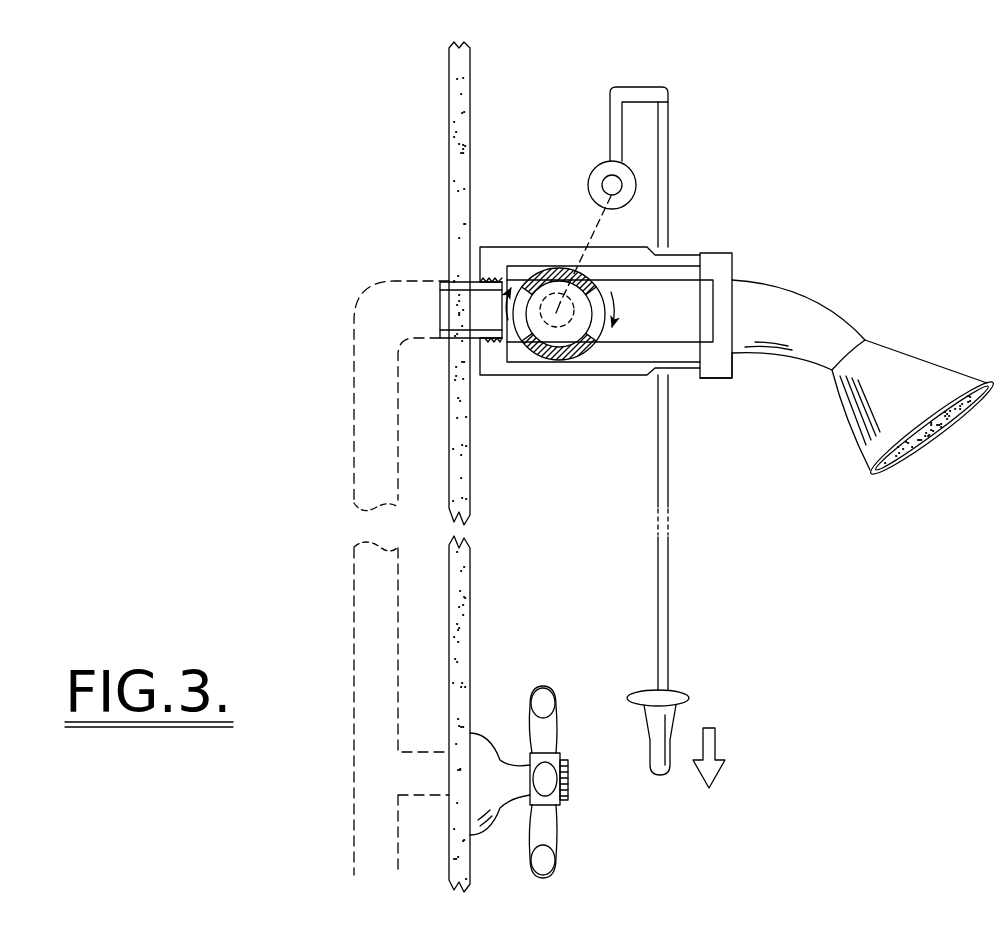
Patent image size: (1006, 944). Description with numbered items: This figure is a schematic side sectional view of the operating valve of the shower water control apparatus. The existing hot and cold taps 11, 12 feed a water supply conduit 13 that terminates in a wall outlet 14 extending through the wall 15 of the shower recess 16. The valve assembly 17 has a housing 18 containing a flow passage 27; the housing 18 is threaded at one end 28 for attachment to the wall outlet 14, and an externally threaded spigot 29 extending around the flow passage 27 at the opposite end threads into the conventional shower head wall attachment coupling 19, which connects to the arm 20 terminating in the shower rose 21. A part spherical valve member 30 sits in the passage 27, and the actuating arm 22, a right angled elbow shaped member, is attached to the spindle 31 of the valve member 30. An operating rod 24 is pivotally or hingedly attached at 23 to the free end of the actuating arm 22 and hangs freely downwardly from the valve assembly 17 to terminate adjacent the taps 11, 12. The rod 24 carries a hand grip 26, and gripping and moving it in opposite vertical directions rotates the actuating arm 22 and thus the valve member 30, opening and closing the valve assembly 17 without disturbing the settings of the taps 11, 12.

The hot tap 11 is at (551, 757).
The cold tap 12 is at (563, 745).
The water supply conduit 13 is at (350, 502).
The wall outlet 14 is at (475, 300).
The wall 15 is at (447, 147).
The shower recess 16 is at (555, 535).
The valve assembly 17 is at (563, 321).
The housing 18 is at (596, 276).
The shower head wall attachment coupling 19 is at (735, 371).
The arm 20 is at (812, 299).
The shower rose 21 is at (918, 355).
The actuating arm 22 is at (605, 125).
The pivot attachment 23 is at (672, 88).
The operating rod 24 is at (637, 532).
The hand grip 26 is at (688, 688).
The flow passage 27 is at (610, 311).
The threaded end 28 is at (484, 317).
The externally threaded spigot 29 is at (737, 309).
The part spherical valve member 30 is at (548, 323).
The spindle 31 is at (563, 320).